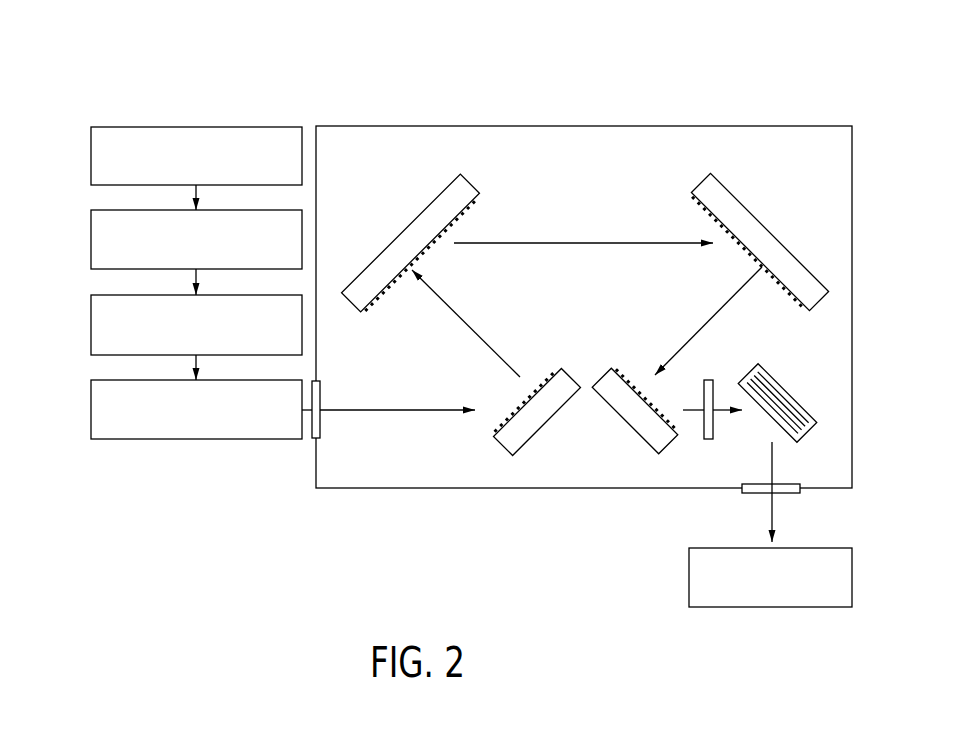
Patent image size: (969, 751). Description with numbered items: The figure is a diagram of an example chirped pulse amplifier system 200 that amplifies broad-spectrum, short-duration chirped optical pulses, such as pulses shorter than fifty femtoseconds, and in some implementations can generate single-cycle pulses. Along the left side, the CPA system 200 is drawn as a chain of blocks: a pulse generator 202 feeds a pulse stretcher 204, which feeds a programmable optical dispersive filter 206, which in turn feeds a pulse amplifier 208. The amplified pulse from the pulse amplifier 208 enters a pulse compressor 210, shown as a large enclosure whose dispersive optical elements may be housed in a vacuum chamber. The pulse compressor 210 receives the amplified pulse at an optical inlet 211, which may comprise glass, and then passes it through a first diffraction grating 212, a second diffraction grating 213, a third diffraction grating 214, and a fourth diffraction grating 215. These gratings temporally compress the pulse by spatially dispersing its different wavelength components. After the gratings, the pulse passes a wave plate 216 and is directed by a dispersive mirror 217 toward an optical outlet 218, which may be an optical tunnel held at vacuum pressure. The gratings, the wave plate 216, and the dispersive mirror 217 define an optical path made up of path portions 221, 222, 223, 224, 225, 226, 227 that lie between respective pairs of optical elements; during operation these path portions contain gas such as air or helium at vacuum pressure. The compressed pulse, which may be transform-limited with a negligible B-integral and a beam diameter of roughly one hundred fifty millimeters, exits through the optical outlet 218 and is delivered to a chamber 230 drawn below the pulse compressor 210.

The chirped pulse amplifier system 200 is at (660, 87).
The pulse generator 202 is at (90, 155).
The pulse stretcher 204 is at (90, 240).
The programmable optical dispersive filter 206 is at (90, 323).
The pulse amplifier 208 is at (90, 410).
The pulse compressor 210 is at (398, 124).
The optical inlet 211 is at (310, 443).
The first diffraction grating 212 is at (550, 424).
The second diffraction grating 213 is at (410, 218).
The third diffraction grating 214 is at (762, 218).
The fourth diffraction grating 215 is at (622, 424).
The wave plate 216 is at (708, 372).
The dispersive mirror 217 is at (792, 388).
The optical outlet 218 is at (739, 495).
The path portion 221 is at (403, 400).
The path portion 222 is at (479, 321).
The path portion 223 is at (585, 237).
The path portion 224 is at (699, 322).
The path portion 225 is at (693, 423).
The path portion 226 is at (720, 414).
The path portion 227 is at (777, 465).
The chamber 230 is at (689, 575).